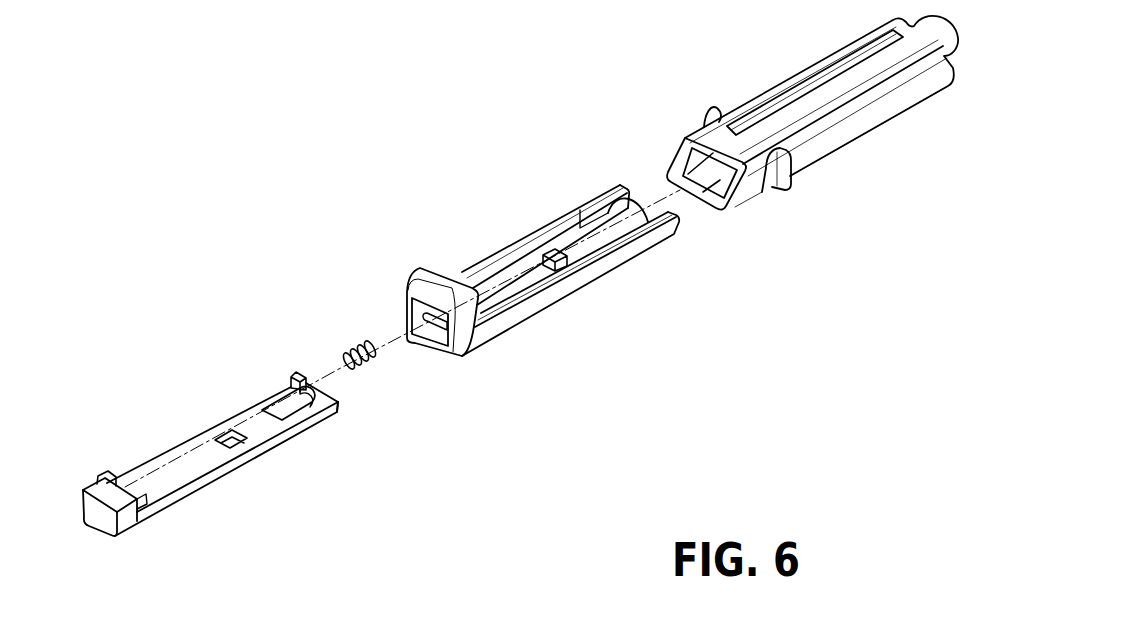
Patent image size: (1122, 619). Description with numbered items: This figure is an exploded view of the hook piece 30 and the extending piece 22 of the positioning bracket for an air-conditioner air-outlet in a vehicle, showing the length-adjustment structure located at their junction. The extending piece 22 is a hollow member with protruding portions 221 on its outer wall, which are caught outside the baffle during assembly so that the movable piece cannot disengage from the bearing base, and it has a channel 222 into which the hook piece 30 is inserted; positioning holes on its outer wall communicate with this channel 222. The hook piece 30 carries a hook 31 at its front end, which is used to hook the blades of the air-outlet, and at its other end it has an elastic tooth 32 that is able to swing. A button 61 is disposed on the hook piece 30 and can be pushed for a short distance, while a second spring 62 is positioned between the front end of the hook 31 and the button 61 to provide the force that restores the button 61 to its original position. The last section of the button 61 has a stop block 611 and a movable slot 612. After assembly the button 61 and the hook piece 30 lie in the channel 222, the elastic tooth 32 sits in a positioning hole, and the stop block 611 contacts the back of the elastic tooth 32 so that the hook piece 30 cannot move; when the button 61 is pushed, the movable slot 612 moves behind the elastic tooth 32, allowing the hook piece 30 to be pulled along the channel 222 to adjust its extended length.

The extending piece 22 is at (857, 118).
The protruding portions 221 is at (712, 120).
The channel 222 is at (722, 188).
The hook piece 30 is at (533, 300).
The hook 31 is at (433, 272).
The elastic tooth 32 is at (627, 220).
The button 61 is at (98, 520).
The stop block 611 is at (340, 414).
The movable slot 612 is at (287, 416).
The second spring 62 is at (354, 350).